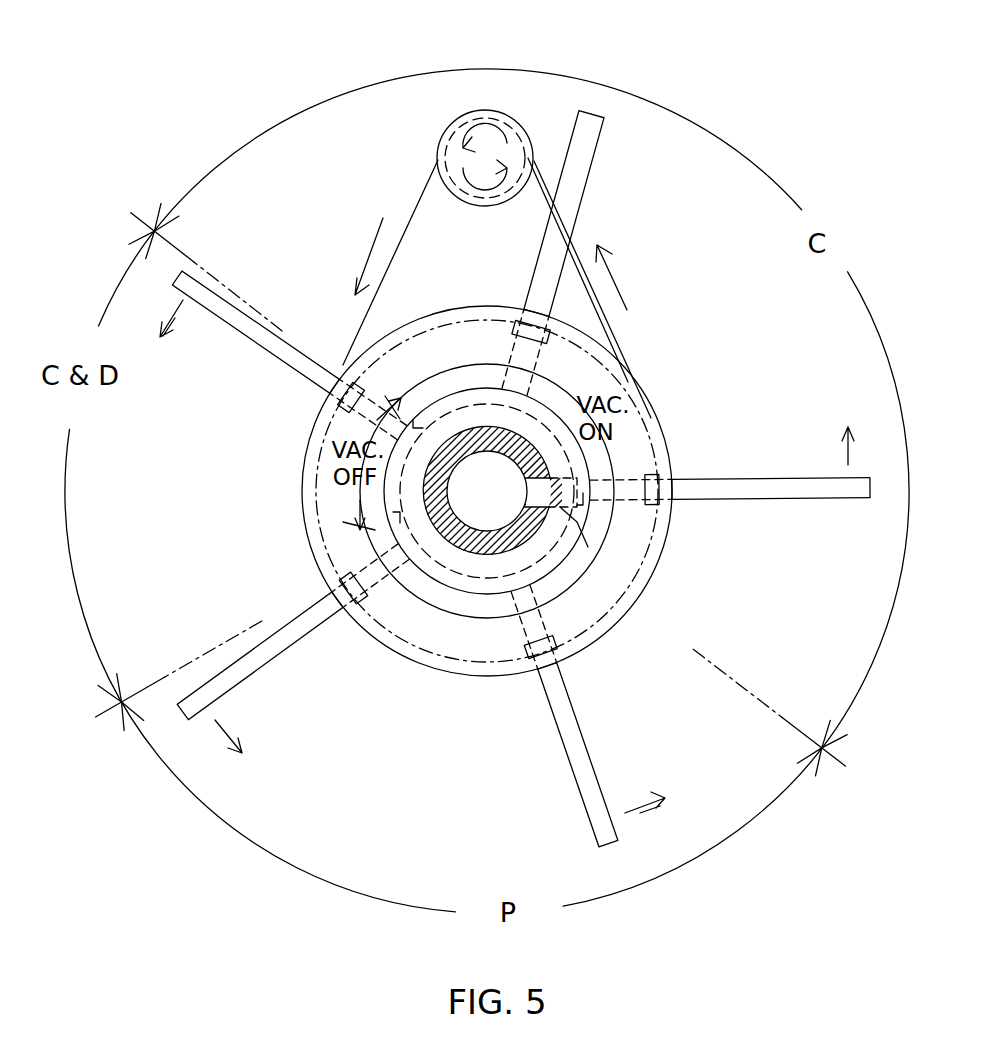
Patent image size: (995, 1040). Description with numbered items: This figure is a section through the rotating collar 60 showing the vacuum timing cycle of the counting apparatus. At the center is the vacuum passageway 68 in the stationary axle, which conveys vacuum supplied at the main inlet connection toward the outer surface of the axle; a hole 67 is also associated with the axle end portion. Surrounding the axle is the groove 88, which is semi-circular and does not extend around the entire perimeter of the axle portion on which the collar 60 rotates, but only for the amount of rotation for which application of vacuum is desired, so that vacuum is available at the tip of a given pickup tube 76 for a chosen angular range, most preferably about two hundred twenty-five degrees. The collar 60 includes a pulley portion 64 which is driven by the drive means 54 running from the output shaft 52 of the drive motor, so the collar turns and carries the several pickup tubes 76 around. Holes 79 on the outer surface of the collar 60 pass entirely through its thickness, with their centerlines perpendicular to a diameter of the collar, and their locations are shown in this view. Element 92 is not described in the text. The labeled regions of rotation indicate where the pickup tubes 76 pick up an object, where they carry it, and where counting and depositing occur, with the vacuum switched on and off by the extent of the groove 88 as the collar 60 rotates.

The output shaft 52 is at (511, 118).
The drive means 54 is at (412, 200).
The rotating collar 60 is at (657, 400).
The pulley portion 64 is at (665, 455).
The hole 67 is at (588, 547).
The vacuum passageway 68 is at (472, 504).
The pickup tube 76 is at (583, 196).
The holes 79 is at (540, 613).
The groove 88 is at (547, 557).
The seal ring 92 is at (460, 593).